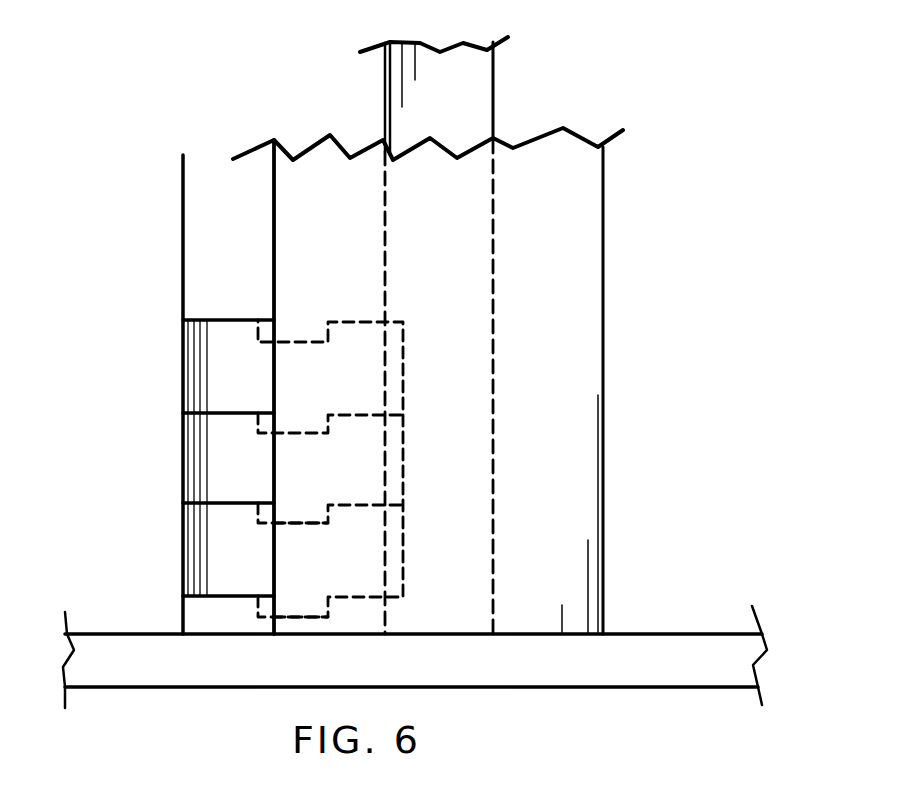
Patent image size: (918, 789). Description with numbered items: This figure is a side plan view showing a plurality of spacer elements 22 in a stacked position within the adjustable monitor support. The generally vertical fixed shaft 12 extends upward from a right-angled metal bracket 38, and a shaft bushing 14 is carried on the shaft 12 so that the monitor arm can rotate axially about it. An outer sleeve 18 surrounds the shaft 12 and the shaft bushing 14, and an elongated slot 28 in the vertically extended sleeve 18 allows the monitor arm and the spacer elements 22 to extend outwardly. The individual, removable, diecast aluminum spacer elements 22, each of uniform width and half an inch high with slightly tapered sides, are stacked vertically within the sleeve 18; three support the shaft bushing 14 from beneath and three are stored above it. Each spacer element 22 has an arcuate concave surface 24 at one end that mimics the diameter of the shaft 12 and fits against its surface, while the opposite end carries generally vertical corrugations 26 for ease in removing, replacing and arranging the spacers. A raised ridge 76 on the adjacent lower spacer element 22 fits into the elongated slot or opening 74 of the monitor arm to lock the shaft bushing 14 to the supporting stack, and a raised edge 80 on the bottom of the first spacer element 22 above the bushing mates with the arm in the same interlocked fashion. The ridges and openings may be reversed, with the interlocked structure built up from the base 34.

The fixed shaft 12 is at (555, 211).
The shaft bushing 14 is at (461, 101).
The outer sleeve 18 is at (305, 151).
The spacer elements 22 is at (228, 381).
The arcuate concave surface 24 is at (405, 373).
The vertical corrugations 26 is at (193, 356).
The elongated slot 28 is at (274, 288).
The base 34 is at (201, 610).
The right-angled metal bracket 38 is at (444, 674).
The elongated slot or opening 74 is at (292, 616).
The raised ridge 76 is at (258, 520).
The raised edge 80 is at (300, 523).